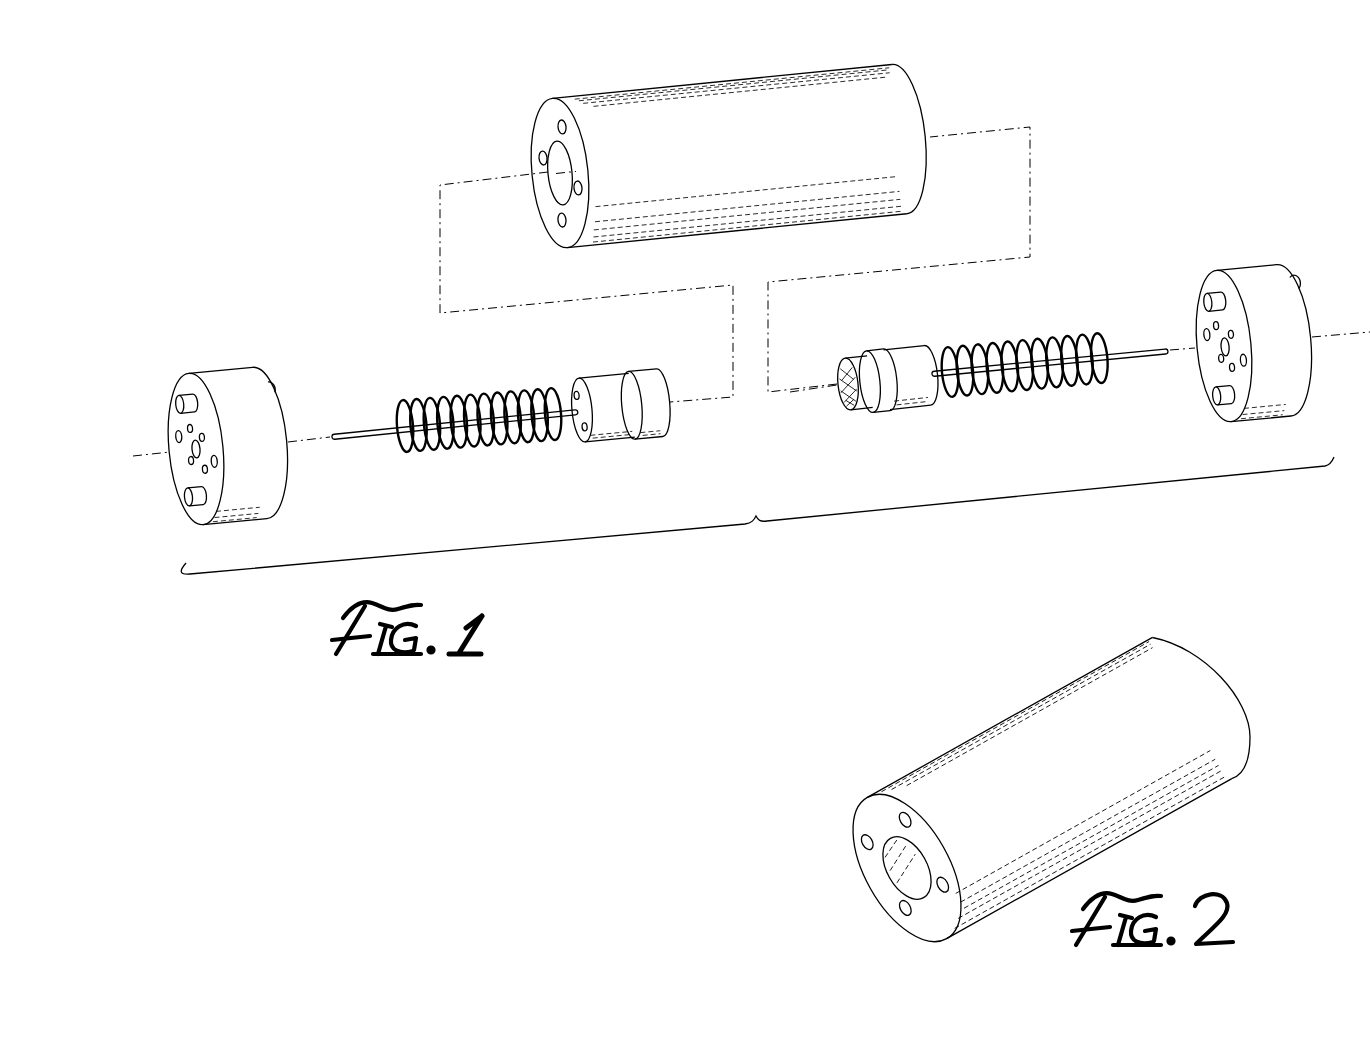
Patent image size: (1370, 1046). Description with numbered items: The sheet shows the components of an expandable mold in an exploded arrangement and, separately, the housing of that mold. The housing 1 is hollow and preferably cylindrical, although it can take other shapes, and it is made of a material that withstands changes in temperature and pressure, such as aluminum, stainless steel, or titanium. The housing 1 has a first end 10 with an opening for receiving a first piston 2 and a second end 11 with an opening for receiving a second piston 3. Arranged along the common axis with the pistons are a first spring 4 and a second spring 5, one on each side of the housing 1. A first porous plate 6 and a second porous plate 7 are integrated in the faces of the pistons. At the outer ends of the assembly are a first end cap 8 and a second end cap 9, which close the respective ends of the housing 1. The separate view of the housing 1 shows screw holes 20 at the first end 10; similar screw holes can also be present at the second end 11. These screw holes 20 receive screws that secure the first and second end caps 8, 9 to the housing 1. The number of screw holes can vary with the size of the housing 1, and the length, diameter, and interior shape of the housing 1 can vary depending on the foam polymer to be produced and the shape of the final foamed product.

In FIG. 1, the housing 1 is at (728, 112).
In FIG. 2, the housing 1 is at (950, 685).
In FIG. 1, the first piston 2 is at (607, 415).
In FIG. 1, the second piston 3 is at (905, 383).
In FIG. 1, the first spring 4 is at (472, 397).
In FIG. 1, the second spring 5 is at (1033, 333).
In FIG. 1, the first porous plate 6 is at (667, 388).
In FIG. 1, the second porous plate 7 is at (845, 373).
In FIG. 1, the first end cap 8 is at (260, 472).
In FIG. 1, the second end cap 9 is at (1288, 372).
In FIG. 1, the first end 10 is at (548, 128).
In FIG. 2, the first end 10 is at (905, 867).
In FIG. 1, the second end 11 is at (917, 102).
In FIG. 2, the second end 11 is at (1240, 692).
In FIG. 2, the screw holes 20 is at (867, 850).